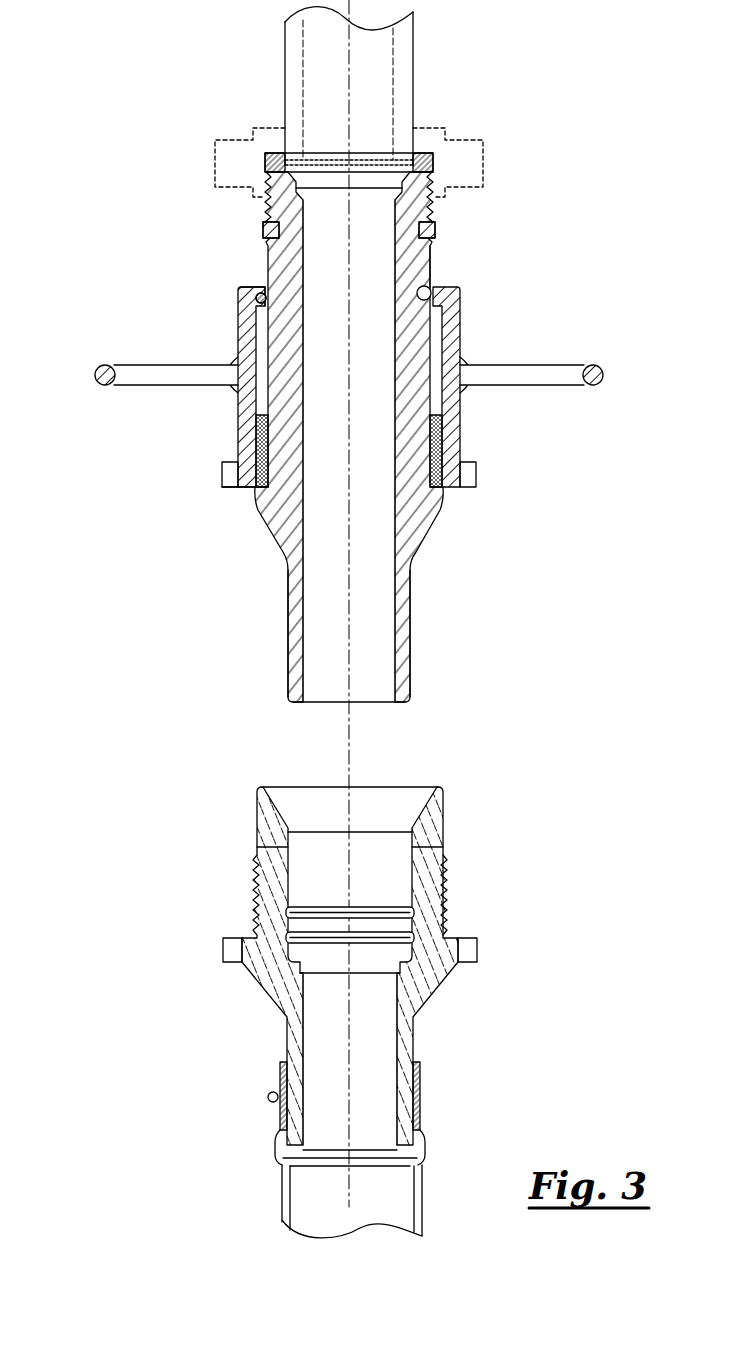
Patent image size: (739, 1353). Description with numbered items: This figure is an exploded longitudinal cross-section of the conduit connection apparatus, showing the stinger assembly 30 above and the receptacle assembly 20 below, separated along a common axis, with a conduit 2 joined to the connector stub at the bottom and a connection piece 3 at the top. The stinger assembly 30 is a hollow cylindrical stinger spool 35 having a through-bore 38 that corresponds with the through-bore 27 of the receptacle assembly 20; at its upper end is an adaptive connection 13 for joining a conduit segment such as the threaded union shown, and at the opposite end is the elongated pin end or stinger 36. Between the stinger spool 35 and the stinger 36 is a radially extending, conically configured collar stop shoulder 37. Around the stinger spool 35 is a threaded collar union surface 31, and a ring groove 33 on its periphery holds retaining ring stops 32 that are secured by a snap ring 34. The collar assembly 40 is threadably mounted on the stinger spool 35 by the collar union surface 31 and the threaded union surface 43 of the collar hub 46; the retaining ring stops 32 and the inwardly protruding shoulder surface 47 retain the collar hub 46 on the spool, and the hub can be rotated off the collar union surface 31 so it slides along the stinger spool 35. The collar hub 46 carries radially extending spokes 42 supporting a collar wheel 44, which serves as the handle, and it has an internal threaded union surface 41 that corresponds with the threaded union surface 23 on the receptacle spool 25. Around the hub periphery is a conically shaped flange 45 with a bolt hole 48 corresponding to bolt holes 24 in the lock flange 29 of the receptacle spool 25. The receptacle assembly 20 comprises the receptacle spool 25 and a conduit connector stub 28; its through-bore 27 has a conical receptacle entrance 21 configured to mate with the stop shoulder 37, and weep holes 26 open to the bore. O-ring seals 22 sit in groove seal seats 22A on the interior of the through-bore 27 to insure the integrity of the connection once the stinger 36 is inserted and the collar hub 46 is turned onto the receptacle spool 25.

The pipe 2 is at (280, 1190).
The connection piece 3 is at (418, 138).
The adaptive connection 13 is at (262, 172).
The receptacle assembly 20 is at (329, 950).
The receptacle entrance 21 is at (378, 848).
The O-ring seals 22 is at (292, 957).
The groove seal seats 22A is at (293, 950).
The threaded union surface 23 is at (445, 900).
The bolt holes 24 is at (470, 956).
The receptacle spool 25 is at (428, 860).
The weep holes 26 is at (258, 847).
The through-bore 27 is at (327, 1082).
The conduit connector stub 28 is at (420, 1142).
The lock flange 29 is at (222, 946).
The stinger assembly 30 is at (335, 437).
The threaded collar union surface 31 is at (259, 293).
The retaining ring stops 32 is at (437, 226).
The ring groove 33 is at (433, 250).
The snap ring 34 is at (265, 228).
The stinger spool 35 is at (445, 340).
The stinger 36 is at (288, 630).
The collar stop shoulder 37 is at (472, 487).
The through-bore 38 is at (370, 545).
The collar assembly 40 is at (324, 402).
The internal threaded union surface 41 is at (260, 445).
The spokes 42 is at (552, 372).
The threaded union surface 43 is at (431, 290).
The collar wheel 44 is at (96, 375).
The conically shaped flange 45 is at (222, 470).
The collar hub 46 is at (240, 356).
The shoulder surface 47 is at (240, 320).
The bolt hole 48 is at (228, 488).